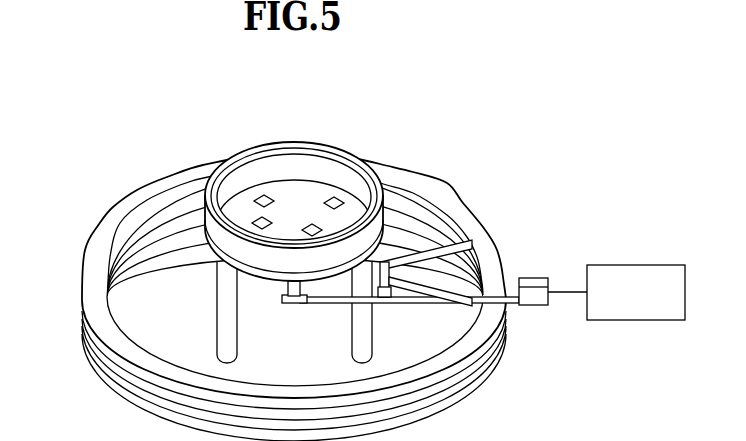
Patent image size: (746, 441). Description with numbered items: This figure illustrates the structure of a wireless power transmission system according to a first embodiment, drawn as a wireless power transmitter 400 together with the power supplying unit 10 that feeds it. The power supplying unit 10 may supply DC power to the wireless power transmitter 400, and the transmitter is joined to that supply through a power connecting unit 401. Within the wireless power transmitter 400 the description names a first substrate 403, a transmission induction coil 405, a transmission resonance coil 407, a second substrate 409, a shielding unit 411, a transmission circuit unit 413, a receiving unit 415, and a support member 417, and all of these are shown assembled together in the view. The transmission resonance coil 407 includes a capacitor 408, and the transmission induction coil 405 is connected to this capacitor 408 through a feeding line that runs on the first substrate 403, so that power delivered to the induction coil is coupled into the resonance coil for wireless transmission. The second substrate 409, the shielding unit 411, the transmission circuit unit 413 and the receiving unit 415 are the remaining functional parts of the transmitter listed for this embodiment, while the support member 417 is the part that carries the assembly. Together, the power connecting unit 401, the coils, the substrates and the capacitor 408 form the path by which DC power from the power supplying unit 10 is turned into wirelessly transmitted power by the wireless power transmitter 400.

The wireless power transmitter 400 is at (60, 54).
The power connecting unit 401 is at (538, 278).
The first substrate 403 is at (178, 332).
The transmission induction coil 405 is at (230, 300).
The transmission resonance coil 407 is at (474, 225).
The capacitor 408 is at (390, 305).
The second substrate 409 is at (300, 197).
The shielding unit 411 is at (250, 148).
The transmission circuit unit 413 is at (260, 195).
The receiving unit 415 is at (150, 187).
The support member 417 is at (217, 301).
The power supplying unit 10 is at (636, 265).